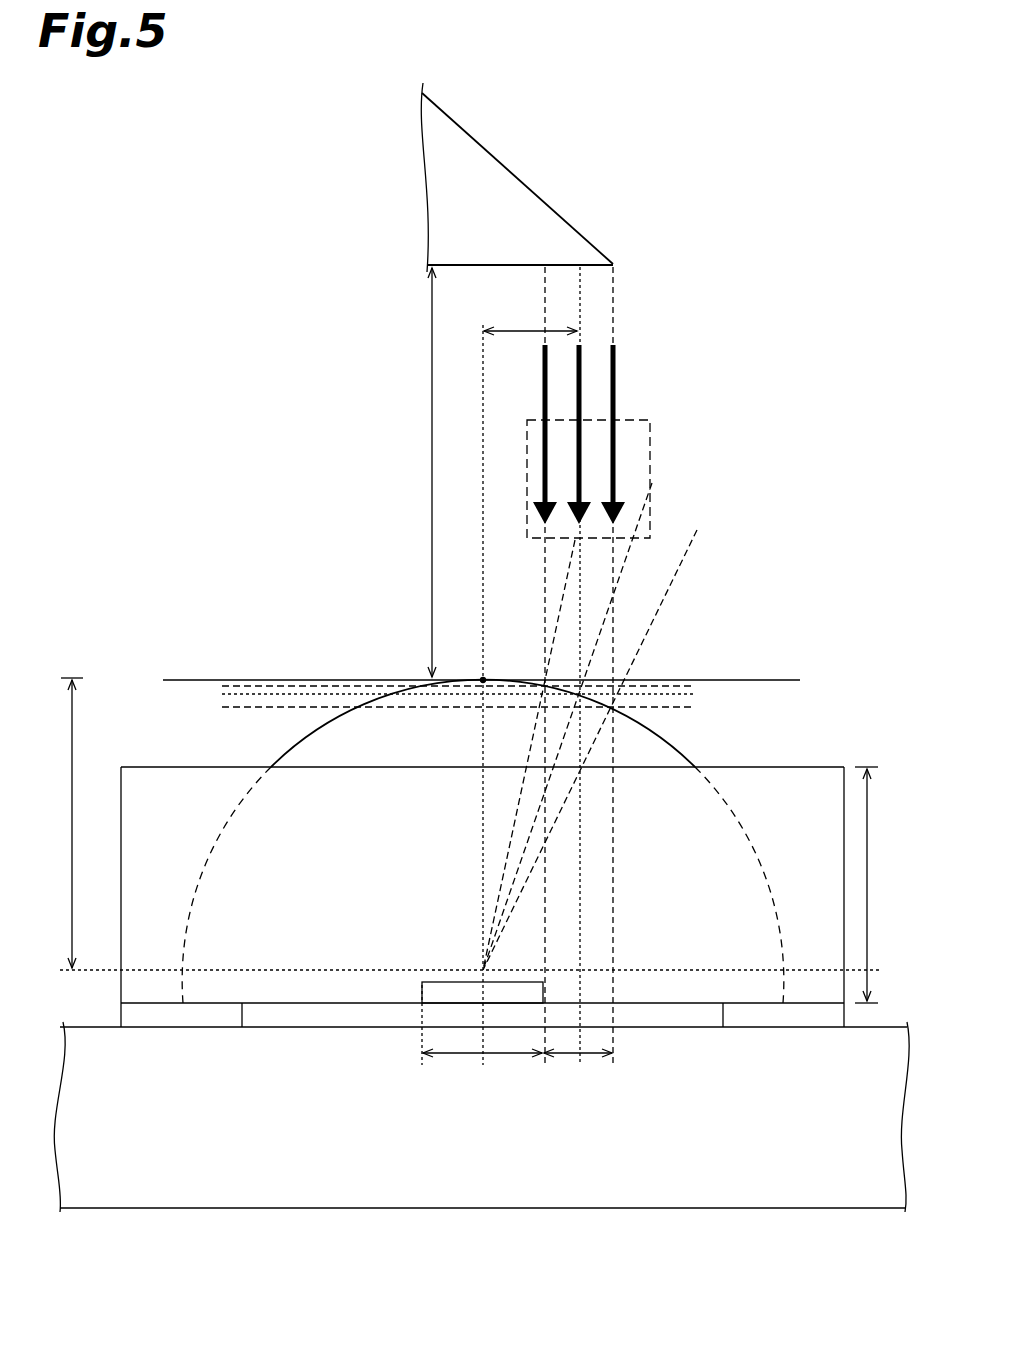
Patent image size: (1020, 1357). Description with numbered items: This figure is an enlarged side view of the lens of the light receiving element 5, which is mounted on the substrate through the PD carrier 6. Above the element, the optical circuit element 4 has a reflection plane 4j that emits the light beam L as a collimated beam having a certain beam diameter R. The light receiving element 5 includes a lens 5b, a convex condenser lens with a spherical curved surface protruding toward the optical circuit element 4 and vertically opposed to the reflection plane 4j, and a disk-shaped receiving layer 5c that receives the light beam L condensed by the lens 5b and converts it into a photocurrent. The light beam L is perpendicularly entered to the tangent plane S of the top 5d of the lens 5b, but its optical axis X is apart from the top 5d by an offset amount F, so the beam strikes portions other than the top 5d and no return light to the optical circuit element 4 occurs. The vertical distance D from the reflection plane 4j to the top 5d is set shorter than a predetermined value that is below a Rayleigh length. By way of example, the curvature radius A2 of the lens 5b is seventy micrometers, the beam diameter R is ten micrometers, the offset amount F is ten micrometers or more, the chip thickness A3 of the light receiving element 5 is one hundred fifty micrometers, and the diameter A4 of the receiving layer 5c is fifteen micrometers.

The optical circuit element 4 is at (517, 176).
The reflection plane 4j is at (517, 182).
The optical axis X is at (581, 287).
The light beam L is at (548, 398).
The vertical distance D is at (420, 472).
The offset amount F is at (530, 317).
The tangent plane S is at (175, 678).
The curvature radius A2 is at (59, 823).
The light receiving element 5 is at (482, 940).
The lens 5b is at (673, 749).
The top 5d is at (482, 679).
The receiving layer 5c is at (420, 987).
The chip thickness A3 is at (881, 885).
The diameter A4 is at (482, 1069).
The beam diameter R is at (578, 1069).
The PD carrier 6 is at (848, 1192).